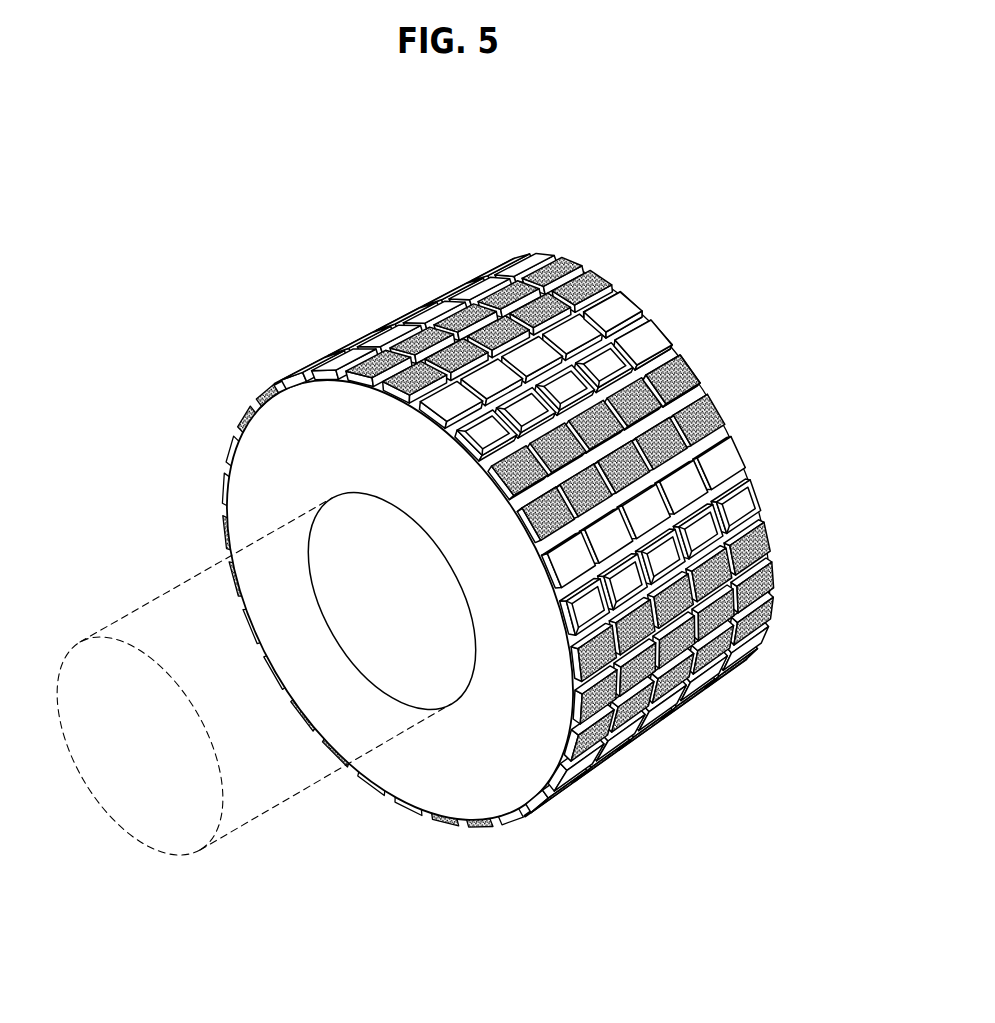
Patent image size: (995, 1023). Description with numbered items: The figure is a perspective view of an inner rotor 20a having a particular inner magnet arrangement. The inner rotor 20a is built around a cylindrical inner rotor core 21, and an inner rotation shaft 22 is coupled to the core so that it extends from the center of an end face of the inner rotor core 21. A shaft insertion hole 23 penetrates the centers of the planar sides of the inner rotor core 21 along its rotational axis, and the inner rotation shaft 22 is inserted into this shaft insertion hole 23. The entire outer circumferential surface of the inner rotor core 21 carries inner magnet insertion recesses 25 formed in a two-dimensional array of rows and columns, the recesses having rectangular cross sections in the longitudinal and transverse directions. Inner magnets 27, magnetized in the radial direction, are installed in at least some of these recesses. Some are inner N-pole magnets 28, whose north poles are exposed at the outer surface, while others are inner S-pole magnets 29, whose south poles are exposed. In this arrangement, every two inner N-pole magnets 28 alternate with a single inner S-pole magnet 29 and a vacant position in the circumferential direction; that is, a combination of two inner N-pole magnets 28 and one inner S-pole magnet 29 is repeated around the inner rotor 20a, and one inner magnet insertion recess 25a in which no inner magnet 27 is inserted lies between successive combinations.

The inner rotor 20a is at (340, 258).
The inner rotor core 21 is at (267, 487).
The inner rotation shaft 22 is at (143, 603).
The shaft insertion hole 23 is at (391, 693).
The inner magnet insertion recesses 25 is at (562, 497).
The inner magnet insertion recess 25a is at (688, 342).
The inner magnets 27 is at (625, 276).
The inner N-pole magnets 28 is at (622, 274).
The inner S-pole magnet 29 is at (643, 309).